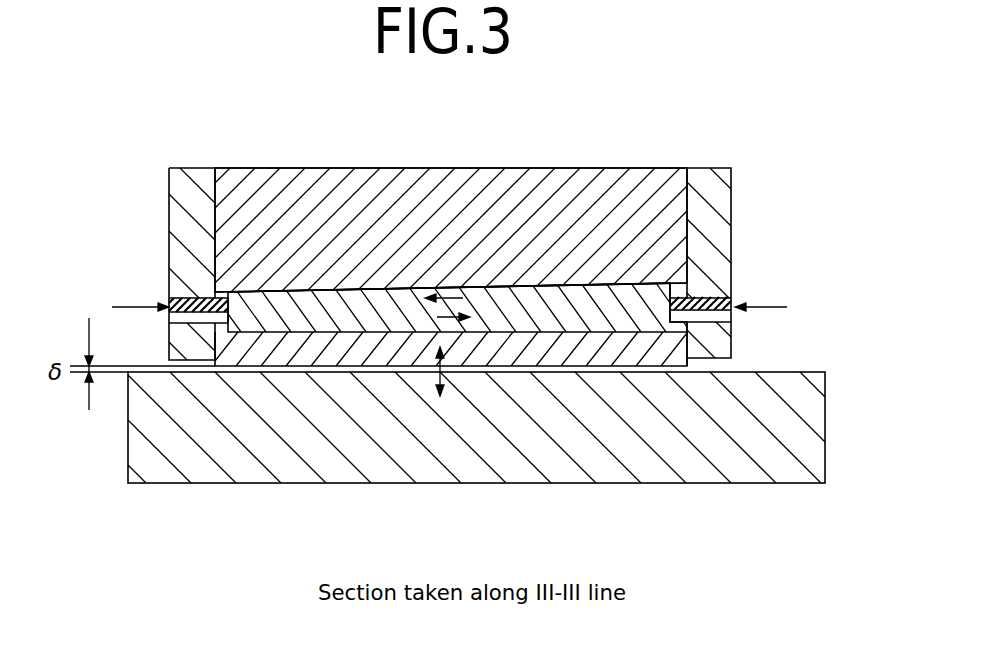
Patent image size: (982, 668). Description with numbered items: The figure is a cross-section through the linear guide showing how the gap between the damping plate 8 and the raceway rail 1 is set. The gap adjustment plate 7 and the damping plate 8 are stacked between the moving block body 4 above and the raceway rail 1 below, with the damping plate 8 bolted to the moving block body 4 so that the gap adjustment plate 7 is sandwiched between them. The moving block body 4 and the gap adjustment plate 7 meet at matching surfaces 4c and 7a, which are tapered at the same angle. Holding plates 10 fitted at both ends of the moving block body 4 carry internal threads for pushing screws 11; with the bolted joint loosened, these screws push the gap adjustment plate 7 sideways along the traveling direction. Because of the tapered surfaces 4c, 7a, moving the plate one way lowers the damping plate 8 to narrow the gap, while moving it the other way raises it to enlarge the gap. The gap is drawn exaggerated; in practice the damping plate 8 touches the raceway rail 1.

The raceway rail 1 is at (557, 470).
The moving block body 4 is at (558, 192).
The matching surface 4c is at (604, 288).
The gap adjustment plate 7 is at (275, 303).
The matching surface 7a is at (362, 284).
The damping plate 8 is at (612, 368).
The holding plate 10 is at (186, 213).
The pushing screw 11 is at (190, 298).